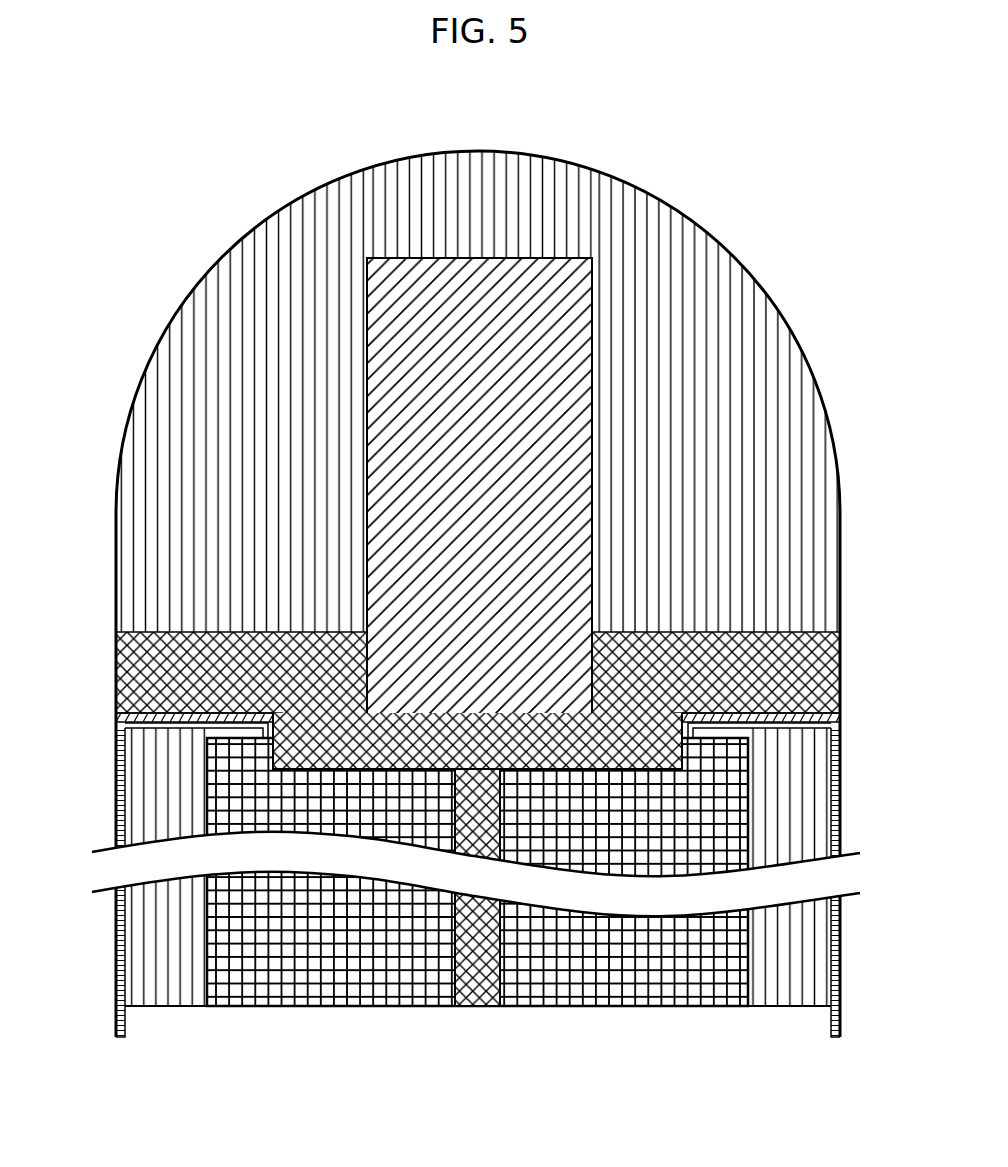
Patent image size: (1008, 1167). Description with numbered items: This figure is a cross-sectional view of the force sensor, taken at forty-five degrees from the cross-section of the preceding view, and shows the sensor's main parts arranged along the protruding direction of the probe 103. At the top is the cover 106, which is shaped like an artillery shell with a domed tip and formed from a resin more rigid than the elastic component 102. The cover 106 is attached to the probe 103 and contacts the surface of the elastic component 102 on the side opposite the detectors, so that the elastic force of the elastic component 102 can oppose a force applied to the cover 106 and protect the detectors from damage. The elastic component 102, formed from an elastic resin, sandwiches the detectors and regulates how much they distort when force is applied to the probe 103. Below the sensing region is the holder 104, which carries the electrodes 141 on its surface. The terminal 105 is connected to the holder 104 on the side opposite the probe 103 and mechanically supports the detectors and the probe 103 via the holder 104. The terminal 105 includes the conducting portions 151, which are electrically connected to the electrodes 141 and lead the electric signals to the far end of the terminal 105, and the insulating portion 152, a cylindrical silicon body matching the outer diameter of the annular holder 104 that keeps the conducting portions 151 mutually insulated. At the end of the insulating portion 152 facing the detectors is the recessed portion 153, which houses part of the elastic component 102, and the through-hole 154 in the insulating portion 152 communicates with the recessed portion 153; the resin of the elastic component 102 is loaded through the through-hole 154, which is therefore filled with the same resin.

The elastic component 102 is at (820, 632).
The probe 103 is at (593, 358).
The holder 104 is at (160, 705).
The terminal 105 is at (116, 772).
The cover 106 is at (597, 168).
The electrodes 141 is at (155, 728).
The conducting portions 151 is at (155, 988).
The insulating portion 152 is at (262, 975).
The recessed portion 153 is at (603, 772).
The through-hole 154 is at (475, 985).